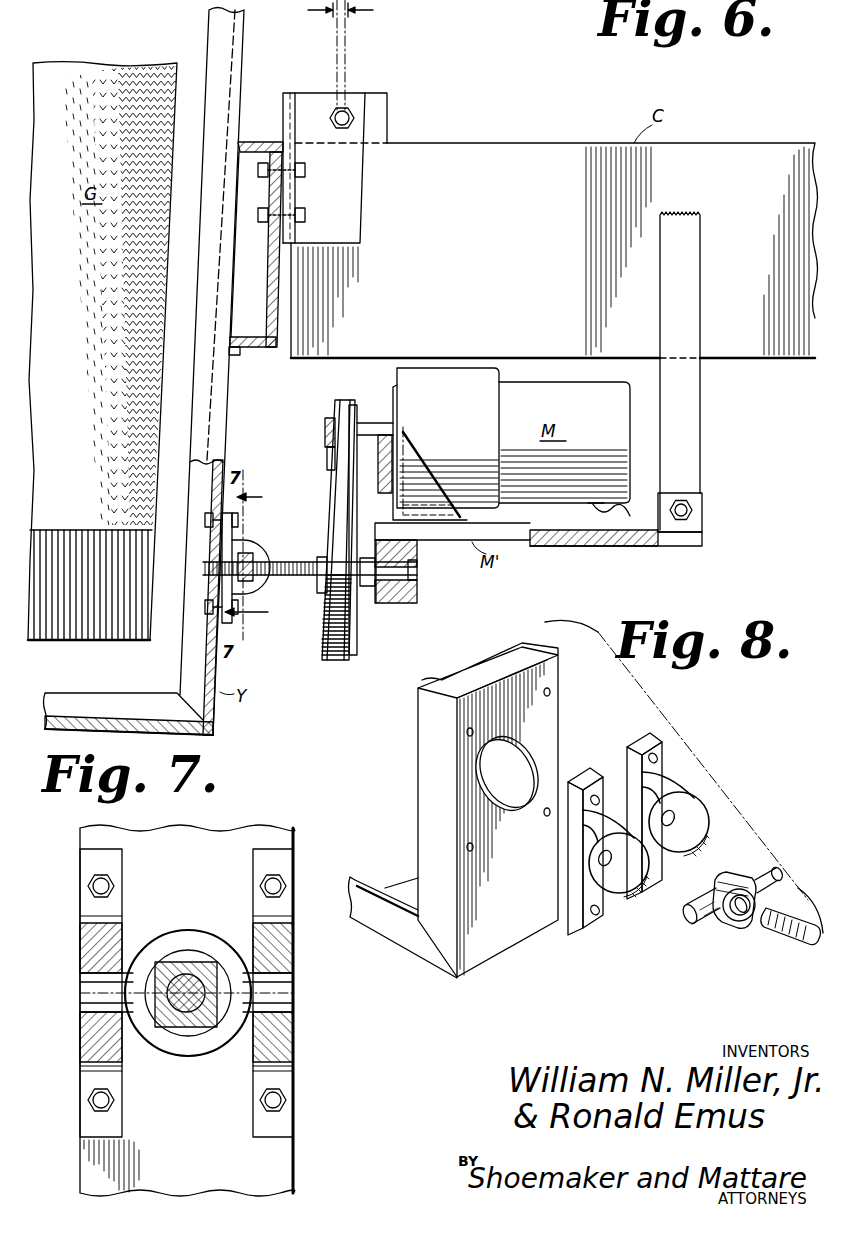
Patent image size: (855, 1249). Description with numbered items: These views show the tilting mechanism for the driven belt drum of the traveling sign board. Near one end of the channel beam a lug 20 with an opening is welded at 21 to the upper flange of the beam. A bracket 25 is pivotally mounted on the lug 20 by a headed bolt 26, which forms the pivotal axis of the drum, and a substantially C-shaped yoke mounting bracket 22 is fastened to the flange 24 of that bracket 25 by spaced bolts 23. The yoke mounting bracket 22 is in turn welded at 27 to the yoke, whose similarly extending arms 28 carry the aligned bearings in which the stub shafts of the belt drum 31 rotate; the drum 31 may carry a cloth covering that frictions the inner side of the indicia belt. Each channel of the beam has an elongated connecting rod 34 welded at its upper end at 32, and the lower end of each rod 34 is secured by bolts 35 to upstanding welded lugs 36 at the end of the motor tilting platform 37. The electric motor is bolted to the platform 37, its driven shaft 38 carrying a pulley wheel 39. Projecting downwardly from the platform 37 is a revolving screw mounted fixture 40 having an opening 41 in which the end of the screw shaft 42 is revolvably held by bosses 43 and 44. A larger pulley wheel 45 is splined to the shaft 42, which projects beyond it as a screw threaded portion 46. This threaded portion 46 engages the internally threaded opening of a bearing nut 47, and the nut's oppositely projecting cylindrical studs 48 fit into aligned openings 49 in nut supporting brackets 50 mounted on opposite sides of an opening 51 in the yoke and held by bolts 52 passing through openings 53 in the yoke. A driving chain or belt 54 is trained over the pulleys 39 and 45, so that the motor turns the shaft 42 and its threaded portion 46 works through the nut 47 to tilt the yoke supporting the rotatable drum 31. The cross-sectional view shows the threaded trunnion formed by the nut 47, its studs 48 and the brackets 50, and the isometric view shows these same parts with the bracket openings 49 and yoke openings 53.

In FIG. 6, the lug 20 is at (386, 93).
In FIG. 6, the weld 21 is at (393, 143).
In FIG. 6, the yoke mounting bracket 22 is at (256, 140).
In FIG. 6, the spaced bolts 23 is at (262, 174).
In FIG. 6, the flange 24 is at (288, 93).
In FIG. 6, the bracket 25 is at (338, 195).
In FIG. 6, the headed bolt 26 is at (346, 108).
In FIG. 6, the weld 27 is at (240, 354).
In FIG. 6, the arms 28 is at (94, 716).
In FIG. 6, the belt drum 31 is at (96, 574).
In FIG. 6, the weld 32 is at (700, 295).
In FIG. 6, the connecting rod 34 is at (700, 420).
In FIG. 6, the bolts 35 is at (692, 508).
In FIG. 6, the upstanding welded lugs 36 is at (702, 530).
In FIG. 6, the motor tilting platform 37 is at (608, 550).
In FIG. 6, the driven shaft 38 is at (366, 420).
In FIG. 6, the pulley wheel 39 is at (335, 406).
In FIG. 6, the revolving screw mounted fixture 40 is at (415, 557).
In FIG. 6, the opening 41 is at (401, 600).
In FIG. 6, the screw shaft 42 is at (390, 604).
In FIG. 6, the boss 43 is at (368, 540).
In FIG. 6, the boss 44 is at (418, 576).
In FIG. 6, the larger pulley wheel 45 is at (324, 658).
In FIG. 6, the screw threaded portion 46 is at (300, 562).
In FIG. 8, the screw threaded portion 46 is at (784, 937).
In FIG. 6, the bearing nut 47 is at (245, 567).
In FIG. 7, the bearing nut 47 is at (190, 962).
In FIG. 8, the bearing nut 47 is at (738, 873).
In FIG. 7, the cylindrical studs 48 is at (278, 994).
In FIG. 8, the cylindrical studs 48 is at (774, 873).
In FIG. 8, the openings 49 is at (668, 818).
In FIG. 6, the nut supporting brackets 50 is at (244, 546).
In FIG. 7, the nut supporting brackets 50 is at (82, 908).
In FIG. 8, the nut supporting brackets 50 is at (663, 757).
In FIG. 6, the opening 51 is at (215, 549).
In FIG. 7, the opening 51 is at (168, 934).
In FIG. 8, the opening 51 is at (515, 757).
In FIG. 6, the bolts 52 is at (239, 606).
In FIG. 7, the bolts 52 is at (264, 886).
In FIG. 8, the openings 53 is at (548, 692).
In FIG. 6, the driving chain or belt 54 is at (330, 468).